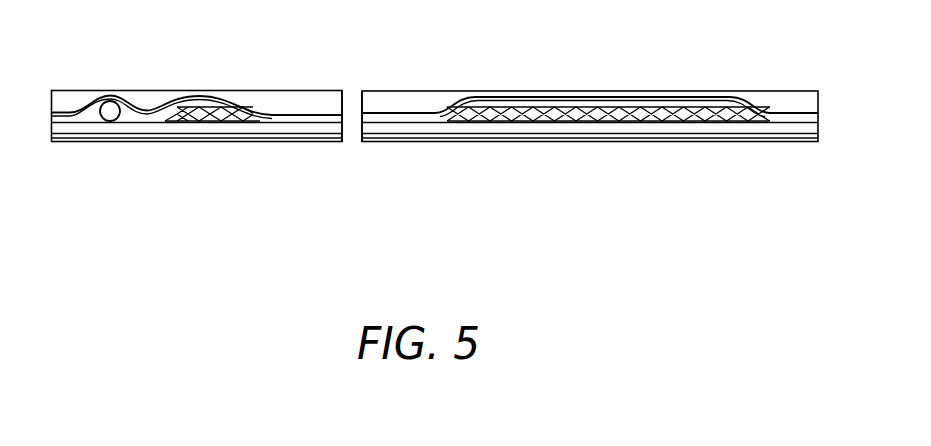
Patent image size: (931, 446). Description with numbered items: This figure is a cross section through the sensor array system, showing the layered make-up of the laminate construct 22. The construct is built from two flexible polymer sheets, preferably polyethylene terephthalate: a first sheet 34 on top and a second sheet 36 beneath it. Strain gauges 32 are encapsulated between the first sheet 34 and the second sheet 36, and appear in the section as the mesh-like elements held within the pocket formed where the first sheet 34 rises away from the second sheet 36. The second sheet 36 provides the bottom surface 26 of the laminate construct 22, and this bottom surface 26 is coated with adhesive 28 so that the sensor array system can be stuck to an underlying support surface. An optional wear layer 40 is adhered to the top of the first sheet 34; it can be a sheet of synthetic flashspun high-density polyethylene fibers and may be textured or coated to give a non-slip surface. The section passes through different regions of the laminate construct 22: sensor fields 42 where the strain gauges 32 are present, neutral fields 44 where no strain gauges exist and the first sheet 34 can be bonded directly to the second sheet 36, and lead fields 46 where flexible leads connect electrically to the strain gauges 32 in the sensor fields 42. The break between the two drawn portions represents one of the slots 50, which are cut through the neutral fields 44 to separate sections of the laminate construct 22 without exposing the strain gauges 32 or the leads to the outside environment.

The laminate construct 22 is at (755, 68).
The bottom surface 26 is at (662, 132).
The adhesive 28 is at (702, 137).
The strain gauges 32 is at (607, 115).
The first sheet 34 is at (522, 103).
The second sheet 36 is at (590, 153).
The wear layer 40 is at (150, 95).
The sensor fields 42 is at (245, 92).
The neutral fields 44 is at (337, 107).
The lead fields 46 is at (130, 95).
The slots 50 is at (350, 137).